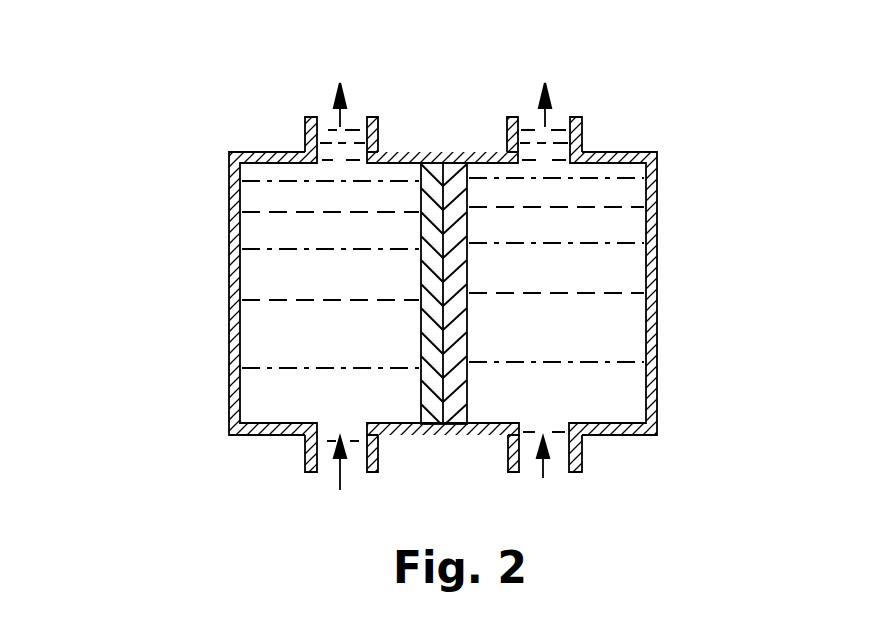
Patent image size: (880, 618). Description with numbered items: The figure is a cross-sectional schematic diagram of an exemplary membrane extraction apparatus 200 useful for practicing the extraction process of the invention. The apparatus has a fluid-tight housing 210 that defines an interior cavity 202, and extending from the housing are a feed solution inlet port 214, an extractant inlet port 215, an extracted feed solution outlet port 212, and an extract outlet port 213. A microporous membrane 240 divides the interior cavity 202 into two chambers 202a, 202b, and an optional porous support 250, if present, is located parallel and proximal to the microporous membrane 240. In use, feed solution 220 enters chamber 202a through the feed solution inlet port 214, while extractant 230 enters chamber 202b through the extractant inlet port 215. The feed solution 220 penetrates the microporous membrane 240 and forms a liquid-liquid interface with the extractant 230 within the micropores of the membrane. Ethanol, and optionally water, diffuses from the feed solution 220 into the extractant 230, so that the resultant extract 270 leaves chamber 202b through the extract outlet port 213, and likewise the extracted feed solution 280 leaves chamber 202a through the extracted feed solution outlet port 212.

The membrane extraction apparatus 200 is at (185, 123).
The interior cavity 202 is at (657, 190).
The chamber 202a is at (257, 272).
The chamber 202b is at (633, 327).
The fluid-tight housing 210 is at (229, 183).
The extracted feed solution outlet port 212 is at (305, 138).
The extract outlet port 213 is at (582, 138).
The feed solution inlet port 214 is at (305, 462).
The extractant inlet port 215 is at (582, 457).
The feed solution 220 is at (258, 368).
The extractant 230 is at (621, 243).
The microporous membrane 240 is at (432, 180).
The porous support 250 is at (457, 415).
The extract 270 is at (549, 113).
The extracted feed solution 280 is at (344, 113).